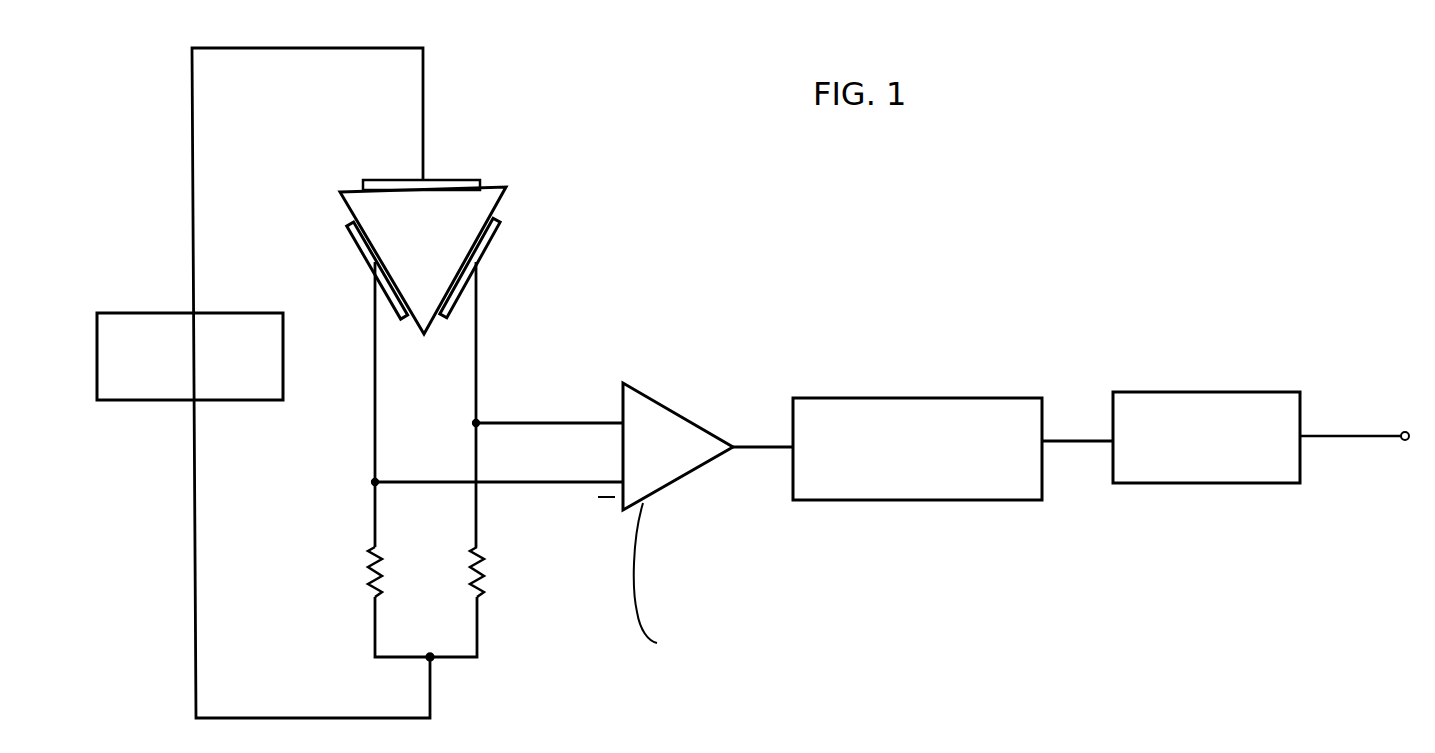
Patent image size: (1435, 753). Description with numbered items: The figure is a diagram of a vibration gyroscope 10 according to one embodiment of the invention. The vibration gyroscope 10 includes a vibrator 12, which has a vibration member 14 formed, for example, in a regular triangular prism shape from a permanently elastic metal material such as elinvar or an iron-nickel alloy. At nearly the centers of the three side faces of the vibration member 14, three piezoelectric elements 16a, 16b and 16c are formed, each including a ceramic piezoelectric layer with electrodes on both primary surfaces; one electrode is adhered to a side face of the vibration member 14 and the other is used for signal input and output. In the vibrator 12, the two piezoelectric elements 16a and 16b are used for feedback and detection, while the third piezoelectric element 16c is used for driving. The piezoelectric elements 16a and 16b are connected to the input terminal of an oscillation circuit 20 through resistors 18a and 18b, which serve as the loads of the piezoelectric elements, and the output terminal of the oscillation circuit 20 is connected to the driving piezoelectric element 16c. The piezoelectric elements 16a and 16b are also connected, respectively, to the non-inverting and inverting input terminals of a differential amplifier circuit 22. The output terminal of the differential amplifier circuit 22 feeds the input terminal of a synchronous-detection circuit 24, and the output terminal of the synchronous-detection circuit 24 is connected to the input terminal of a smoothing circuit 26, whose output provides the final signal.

The vibration gyroscope 10 is at (793, 323).
The vibrator 12 is at (439, 209).
The vibration member 14 is at (487, 200).
The piezoelectric element 16a is at (482, 247).
The piezoelectric element 16b is at (368, 250).
The piezoelectric element 16c is at (443, 180).
The resistor 18a is at (484, 577).
The resistor 18b is at (366, 585).
The oscillation circuit 20 is at (152, 400).
The differential amplifier circuit 22 is at (687, 467).
The synchronous-detection circuit 24 is at (872, 500).
The smoothing circuit 26 is at (1190, 483).